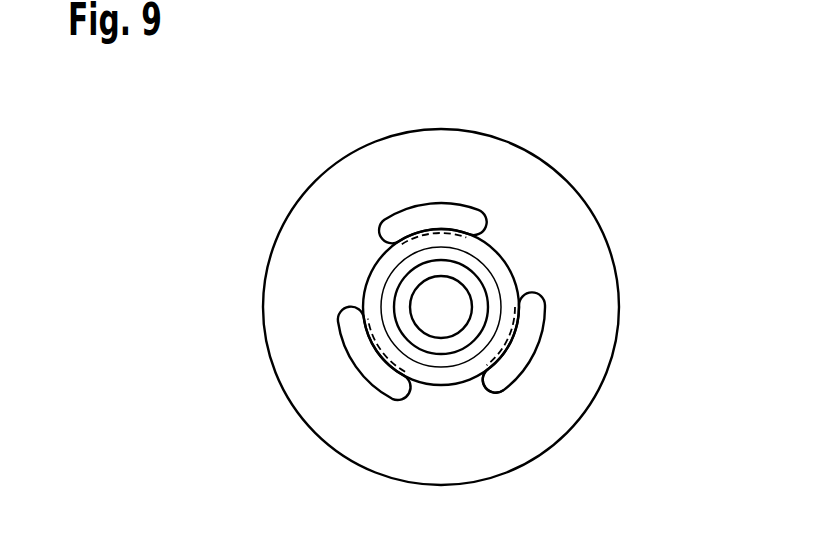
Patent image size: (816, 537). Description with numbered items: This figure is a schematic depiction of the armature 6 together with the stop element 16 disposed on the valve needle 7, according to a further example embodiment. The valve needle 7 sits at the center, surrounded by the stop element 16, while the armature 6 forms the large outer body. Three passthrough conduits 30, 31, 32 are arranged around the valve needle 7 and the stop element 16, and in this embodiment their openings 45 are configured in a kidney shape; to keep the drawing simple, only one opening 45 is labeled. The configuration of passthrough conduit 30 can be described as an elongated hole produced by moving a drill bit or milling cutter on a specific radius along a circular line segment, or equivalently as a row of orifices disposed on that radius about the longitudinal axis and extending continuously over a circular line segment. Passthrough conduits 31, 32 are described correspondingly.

The armature 6 is at (487, 160).
The valve needle 7 is at (449, 307).
The stop element 16 is at (377, 297).
The passthrough conduit 30 is at (525, 347).
The passthrough conduit 31 is at (427, 215).
The passthrough conduit 32 is at (367, 367).
The opening 45 is at (502, 375).